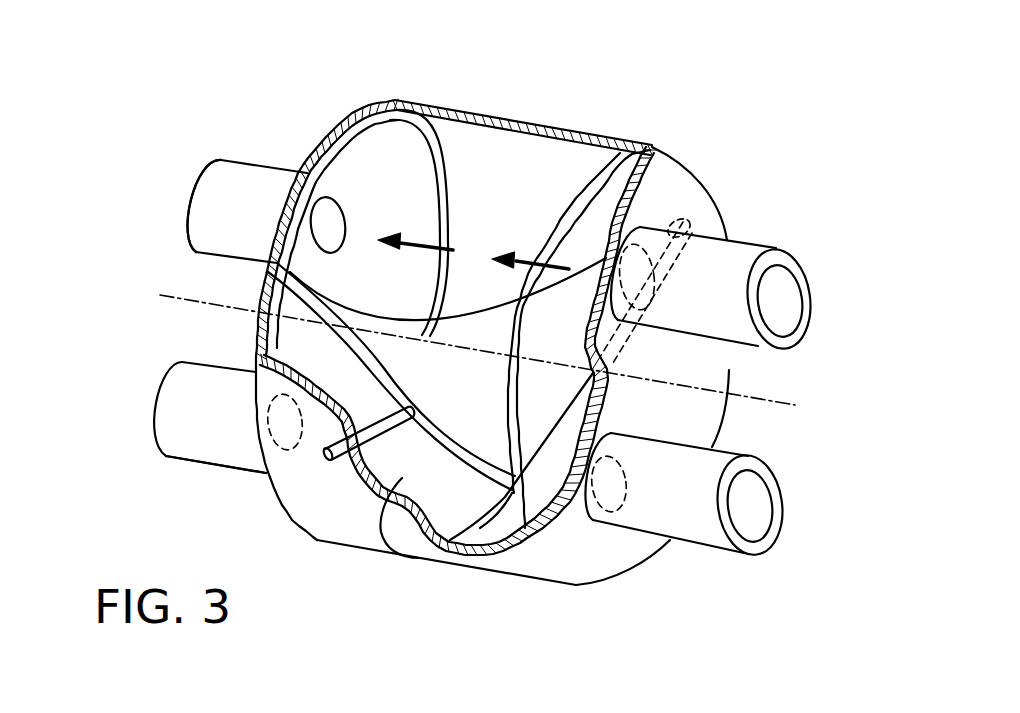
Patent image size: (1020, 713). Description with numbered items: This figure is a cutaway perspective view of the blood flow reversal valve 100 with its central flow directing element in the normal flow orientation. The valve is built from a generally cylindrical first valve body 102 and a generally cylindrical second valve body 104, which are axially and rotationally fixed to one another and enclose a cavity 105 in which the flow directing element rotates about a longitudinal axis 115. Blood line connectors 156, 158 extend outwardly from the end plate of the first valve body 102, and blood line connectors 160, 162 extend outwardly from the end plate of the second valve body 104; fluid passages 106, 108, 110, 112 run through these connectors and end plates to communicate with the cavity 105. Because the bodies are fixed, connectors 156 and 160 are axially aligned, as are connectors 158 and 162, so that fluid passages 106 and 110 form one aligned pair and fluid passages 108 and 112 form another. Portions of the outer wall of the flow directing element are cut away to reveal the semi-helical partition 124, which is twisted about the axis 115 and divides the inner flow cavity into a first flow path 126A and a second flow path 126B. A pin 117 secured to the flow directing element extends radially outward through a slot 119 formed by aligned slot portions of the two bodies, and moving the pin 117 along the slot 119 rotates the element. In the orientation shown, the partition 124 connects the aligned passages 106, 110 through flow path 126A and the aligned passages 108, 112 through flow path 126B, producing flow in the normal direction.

The blood flow reversal valve 100 is at (655, 91).
The first valve body 102 is at (684, 192).
The second valve body 104 is at (354, 140).
The cavity 105 is at (453, 109).
The fluid passage 106 is at (785, 309).
The fluid passage 108 is at (755, 507).
The fluid passage 110 is at (190, 197).
The fluid passage 112 is at (153, 407).
The longitudinal axis 115 is at (165, 293).
The pin 117 is at (337, 468).
The slot 119 is at (376, 495).
The semi-helical partition 124 is at (521, 433).
The first flow path 126A is at (472, 234).
The second flow path 126B is at (493, 532).
The blood line connector 156 is at (752, 247).
The blood line connector 158 is at (693, 530).
The blood line connector 160 is at (237, 173).
The blood line connector 162 is at (206, 442).